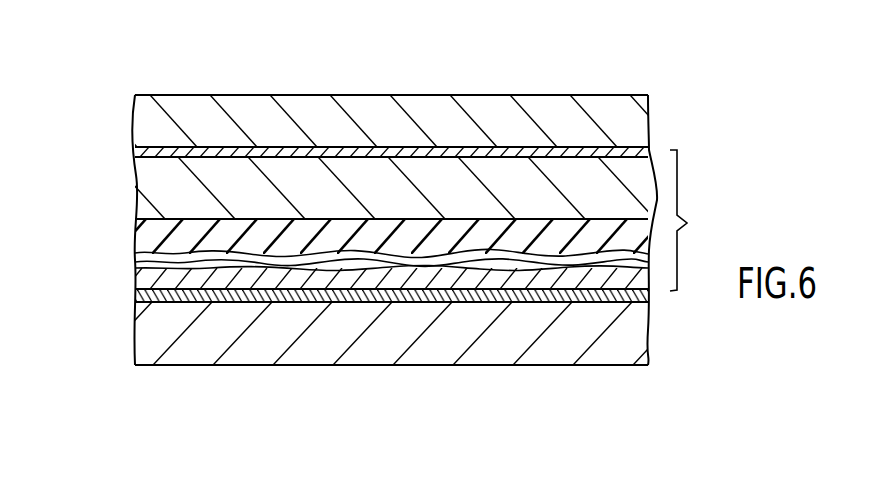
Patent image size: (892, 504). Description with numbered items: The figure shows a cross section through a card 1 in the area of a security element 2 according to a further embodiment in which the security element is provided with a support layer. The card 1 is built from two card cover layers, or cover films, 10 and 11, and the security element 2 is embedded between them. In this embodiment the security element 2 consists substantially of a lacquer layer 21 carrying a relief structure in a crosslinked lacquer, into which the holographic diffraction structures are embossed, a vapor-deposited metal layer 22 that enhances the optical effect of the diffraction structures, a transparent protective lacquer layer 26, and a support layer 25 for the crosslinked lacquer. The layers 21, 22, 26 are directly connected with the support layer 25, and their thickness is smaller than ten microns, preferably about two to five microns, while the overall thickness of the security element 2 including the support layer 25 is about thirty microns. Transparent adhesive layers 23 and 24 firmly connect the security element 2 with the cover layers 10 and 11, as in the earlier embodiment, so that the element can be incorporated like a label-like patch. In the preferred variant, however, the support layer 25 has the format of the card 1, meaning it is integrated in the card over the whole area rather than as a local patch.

The card 1 is at (387, 78).
The security element 2 is at (689, 220).
The card cover layer 10 is at (225, 117).
The card cover layer 11 is at (273, 340).
The relief layer 21 is at (138, 243).
The metal layer 22 is at (137, 262).
The adhesive layer 23 is at (150, 300).
The adhesive layer 24 is at (137, 147).
The support layer 25 is at (155, 192).
The protective lacquer layer 26 is at (177, 285).